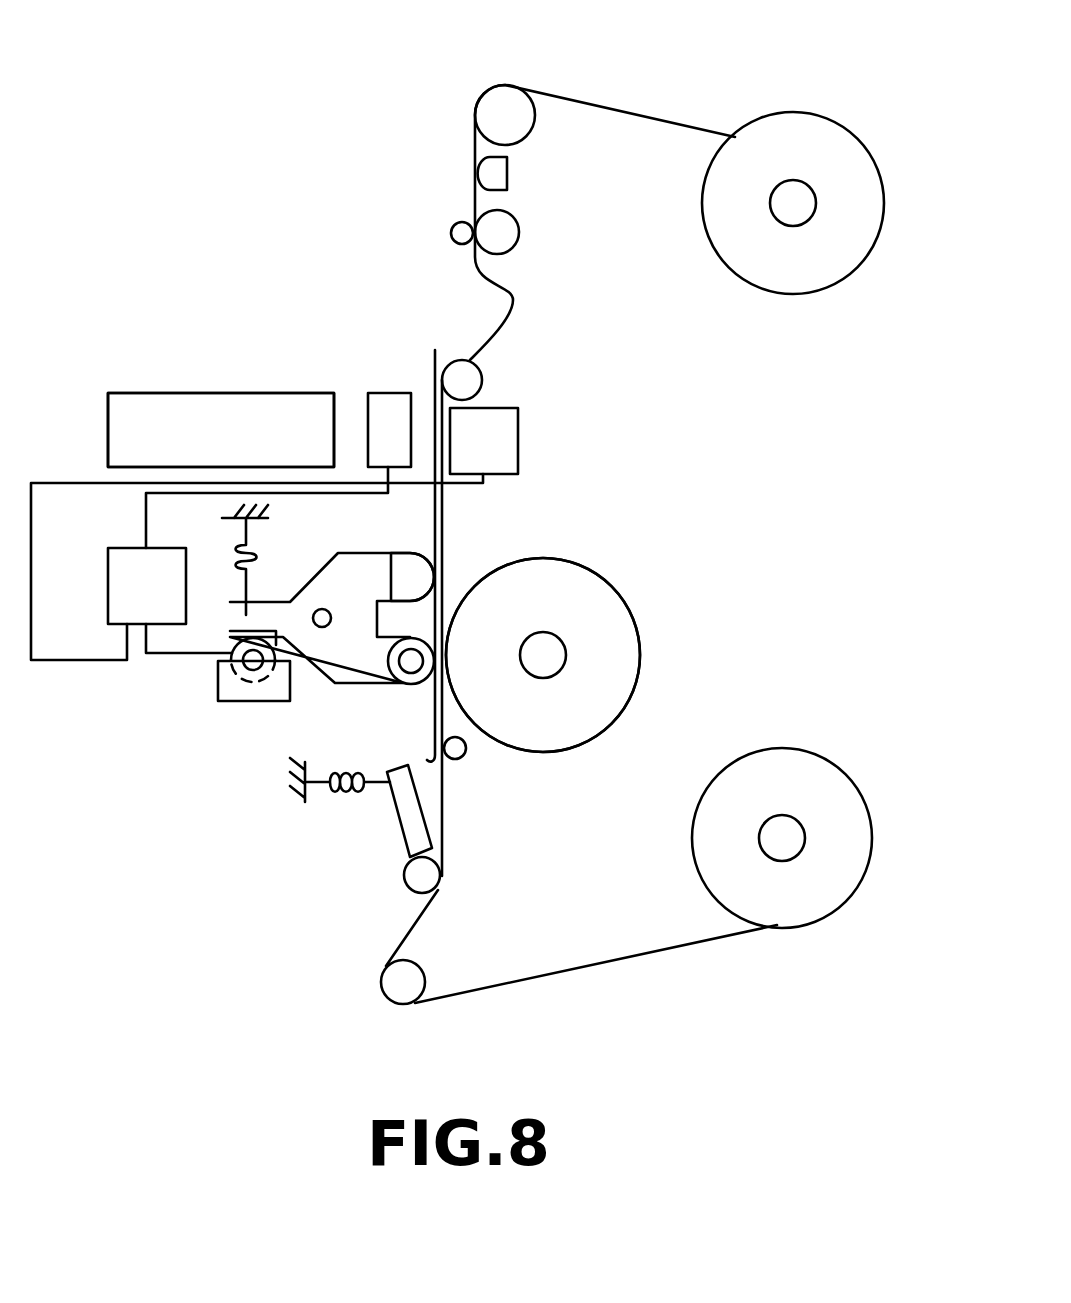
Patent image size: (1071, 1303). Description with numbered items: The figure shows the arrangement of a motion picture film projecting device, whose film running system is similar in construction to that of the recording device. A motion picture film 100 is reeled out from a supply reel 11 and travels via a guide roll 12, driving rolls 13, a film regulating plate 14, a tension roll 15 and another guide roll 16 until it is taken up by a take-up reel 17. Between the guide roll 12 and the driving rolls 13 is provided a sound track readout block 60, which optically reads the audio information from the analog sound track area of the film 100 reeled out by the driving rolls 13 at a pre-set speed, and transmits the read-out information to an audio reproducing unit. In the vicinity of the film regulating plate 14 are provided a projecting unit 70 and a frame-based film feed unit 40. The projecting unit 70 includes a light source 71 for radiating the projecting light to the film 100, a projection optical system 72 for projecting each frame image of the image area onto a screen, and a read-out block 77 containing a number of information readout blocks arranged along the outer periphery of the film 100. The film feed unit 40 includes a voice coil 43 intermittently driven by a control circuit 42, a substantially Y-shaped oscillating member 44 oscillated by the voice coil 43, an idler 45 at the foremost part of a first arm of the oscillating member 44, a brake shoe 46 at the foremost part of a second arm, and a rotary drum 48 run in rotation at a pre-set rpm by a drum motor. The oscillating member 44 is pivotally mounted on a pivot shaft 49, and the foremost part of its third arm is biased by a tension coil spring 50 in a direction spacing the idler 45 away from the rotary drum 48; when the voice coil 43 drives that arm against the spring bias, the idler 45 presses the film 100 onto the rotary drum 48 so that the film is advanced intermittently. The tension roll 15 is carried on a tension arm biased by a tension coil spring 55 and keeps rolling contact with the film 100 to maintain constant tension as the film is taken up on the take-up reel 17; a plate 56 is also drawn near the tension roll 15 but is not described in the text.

The motion picture film 100 is at (648, 115).
The supply reel 11 is at (817, 148).
The guide roll 12 is at (503, 115).
The driving rolls 13 is at (492, 222).
The film regulating plate 14 is at (434, 352).
The tension roll 15 is at (416, 876).
The guide roll 16 is at (398, 988).
The take-up reel 17 is at (797, 777).
The frame-based film feed unit 40 is at (652, 580).
The control circuit 42 is at (120, 575).
The voice coil 43 is at (236, 667).
The oscillating member 44 is at (333, 658).
The idler 45 is at (398, 688).
The brake shoe 46 is at (413, 577).
The rotary drum 48 is at (557, 730).
The pivot shaft 49 is at (328, 612).
The tension coil spring 50 is at (235, 547).
The tension coil spring 55 is at (330, 792).
The guide plate 56 is at (415, 830).
The sound track readout block 60 is at (510, 177).
The projecting unit 70 is at (322, 340).
The light source 71 is at (510, 428).
The projection optical system 72 is at (220, 418).
The read-out block 77 is at (390, 418).